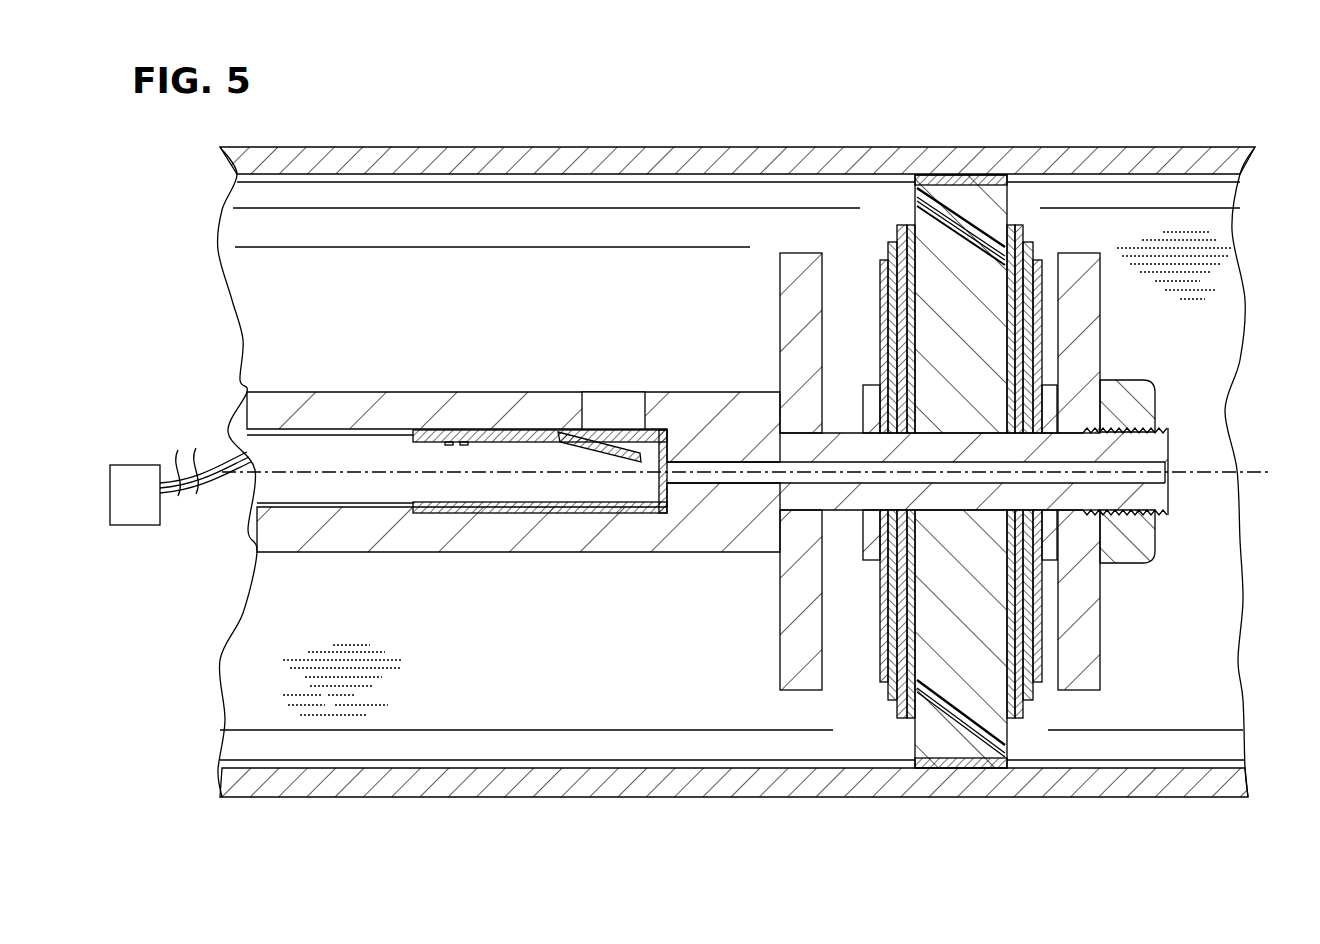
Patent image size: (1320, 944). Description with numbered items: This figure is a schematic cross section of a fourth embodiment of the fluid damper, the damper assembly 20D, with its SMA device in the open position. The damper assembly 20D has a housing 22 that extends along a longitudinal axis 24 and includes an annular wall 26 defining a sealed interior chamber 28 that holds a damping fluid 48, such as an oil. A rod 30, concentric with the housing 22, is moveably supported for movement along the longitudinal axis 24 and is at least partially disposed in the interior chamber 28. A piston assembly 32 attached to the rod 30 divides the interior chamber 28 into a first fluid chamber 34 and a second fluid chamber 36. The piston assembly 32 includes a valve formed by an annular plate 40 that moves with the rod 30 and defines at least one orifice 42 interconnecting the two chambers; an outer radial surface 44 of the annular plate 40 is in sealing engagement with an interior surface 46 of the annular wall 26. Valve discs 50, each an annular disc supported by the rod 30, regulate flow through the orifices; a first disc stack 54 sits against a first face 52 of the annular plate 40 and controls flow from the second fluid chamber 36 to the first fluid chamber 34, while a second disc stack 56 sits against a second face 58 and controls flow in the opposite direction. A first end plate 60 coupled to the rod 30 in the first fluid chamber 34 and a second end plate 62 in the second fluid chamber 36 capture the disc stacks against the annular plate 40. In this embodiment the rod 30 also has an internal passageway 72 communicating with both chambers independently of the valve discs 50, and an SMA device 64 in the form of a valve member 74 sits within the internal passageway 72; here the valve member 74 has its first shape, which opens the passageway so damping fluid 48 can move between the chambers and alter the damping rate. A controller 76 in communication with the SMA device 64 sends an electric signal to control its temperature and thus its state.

The damper assembly 20D is at (1183, 88).
The housing 22 is at (512, 146).
The longitudinal axis 24 is at (237, 470).
The annular wall 26 is at (595, 165).
The interior chamber 28 is at (426, 320).
The rod 30 is at (352, 540).
The piston assembly 32 is at (1065, 223).
The first fluid chamber 34 is at (566, 677).
The second fluid chamber 36 is at (1181, 664).
The annular plate 40 is at (975, 748).
The orifice 42 is at (962, 218).
The outer radial surface 44 is at (950, 168).
The interior surface 46 is at (672, 183).
The damping fluid 48 is at (355, 718).
The valve disc 50 is at (878, 240).
The first face 52 is at (913, 744).
The first disc stack 54 is at (885, 693).
The second disc stack 56 is at (1042, 248).
The second face 58 is at (1010, 200).
The first end plate 60 is at (791, 683).
The second end plate 62 is at (1088, 685).
The SMA device 64 is at (490, 448).
The internal passageway 72 is at (1143, 462).
The valve member 74 is at (605, 455).
The controller 76 is at (140, 478).